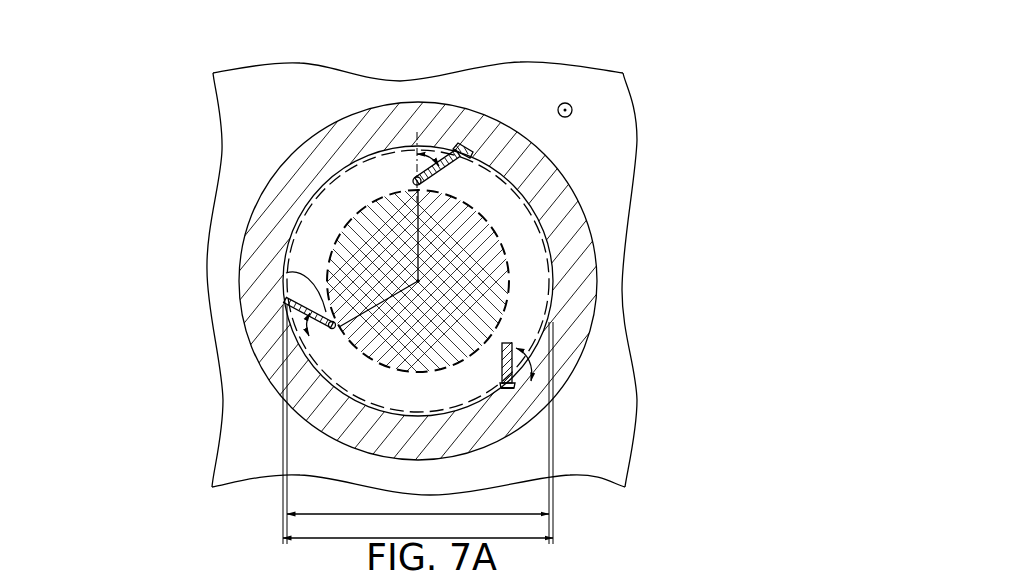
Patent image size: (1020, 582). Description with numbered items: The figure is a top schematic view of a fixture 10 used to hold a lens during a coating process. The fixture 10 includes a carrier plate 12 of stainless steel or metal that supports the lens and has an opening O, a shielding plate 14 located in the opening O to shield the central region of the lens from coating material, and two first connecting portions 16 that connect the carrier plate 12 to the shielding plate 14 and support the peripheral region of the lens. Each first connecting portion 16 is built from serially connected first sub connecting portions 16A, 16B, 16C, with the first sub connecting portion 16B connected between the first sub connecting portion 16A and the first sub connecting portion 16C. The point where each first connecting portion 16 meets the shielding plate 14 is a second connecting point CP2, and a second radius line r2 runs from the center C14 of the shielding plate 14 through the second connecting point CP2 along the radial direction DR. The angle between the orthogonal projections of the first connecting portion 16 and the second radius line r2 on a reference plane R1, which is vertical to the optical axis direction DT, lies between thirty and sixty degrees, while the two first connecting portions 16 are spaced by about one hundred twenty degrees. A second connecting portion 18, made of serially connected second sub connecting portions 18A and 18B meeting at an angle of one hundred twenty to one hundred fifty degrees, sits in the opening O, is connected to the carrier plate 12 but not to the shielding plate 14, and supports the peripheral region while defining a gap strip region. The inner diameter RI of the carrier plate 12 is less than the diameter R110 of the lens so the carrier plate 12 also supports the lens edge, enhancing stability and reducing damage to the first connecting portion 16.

The fixture 10 is at (679, 541).
The carrier plate 12 is at (590, 270).
The shielding plate 14 is at (498, 240).
The first connecting portion 16 is at (470, 37).
The first sub connecting portion 16A is at (413, 178).
The first sub connecting portion 16B is at (442, 158).
The first sub connecting portion 16C is at (470, 147).
The second connecting portion 18 is at (689, 384).
The second sub connecting portion 18A is at (510, 384).
The second sub connecting portion 18B is at (512, 347).
The opening O is at (318, 212).
The center of the shielding plate C14 is at (439, 280).
The second connecting point CP2 is at (421, 188).
The radial direction DR is at (378, 260).
The optical axis direction DT is at (581, 110).
The reference plane R1 is at (223, 127).
The second radius line r2 is at (410, 184).
The diameter of the lens R110 is at (418, 424).
The inner diameter of the carrier plate RI is at (418, 424).